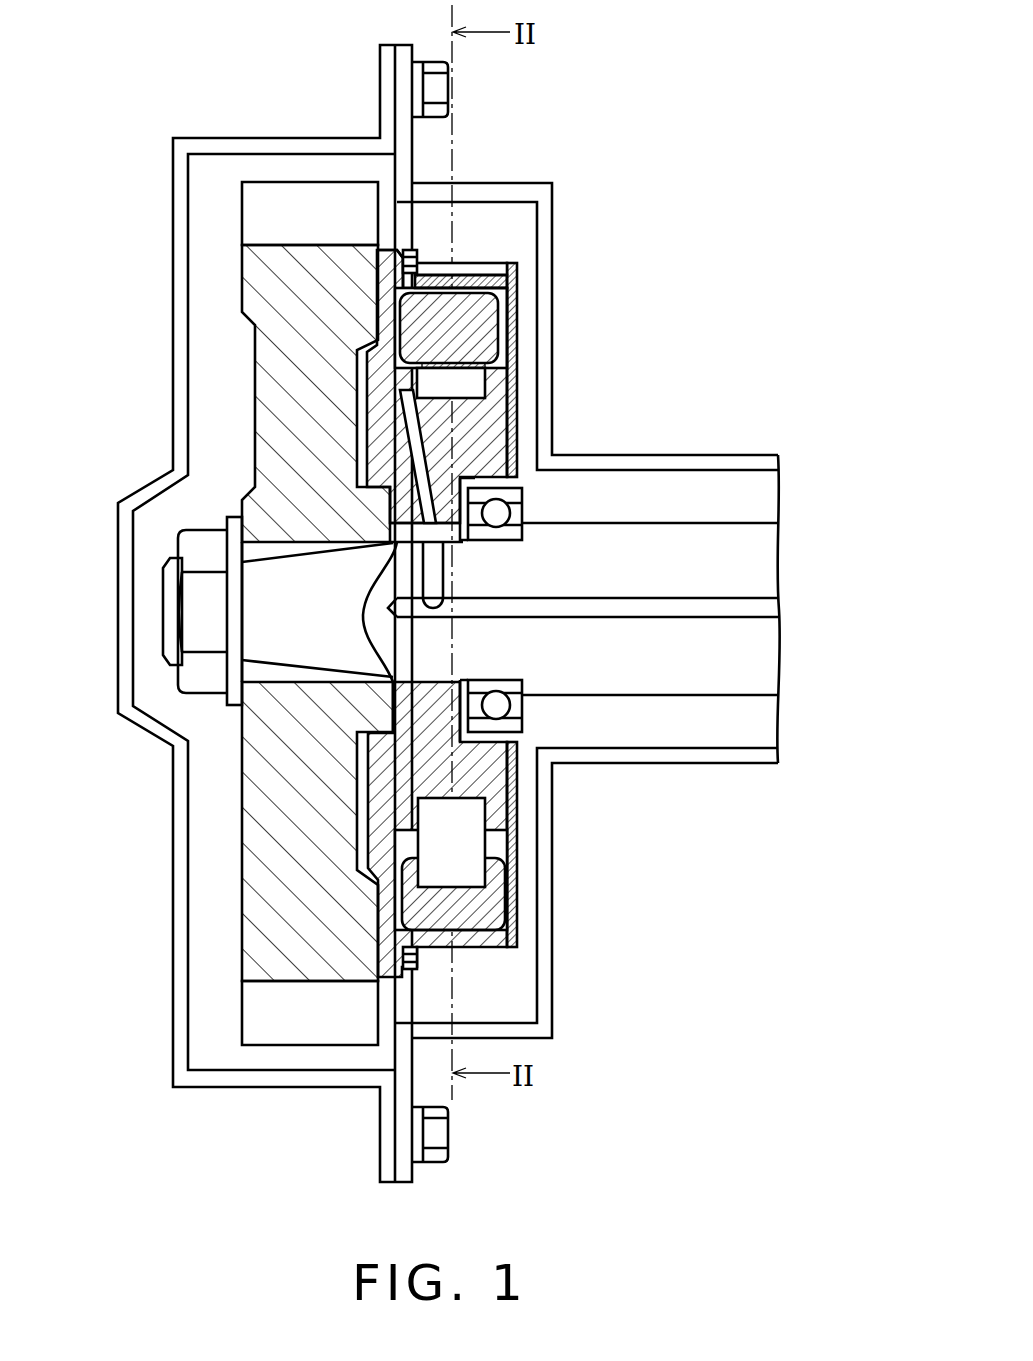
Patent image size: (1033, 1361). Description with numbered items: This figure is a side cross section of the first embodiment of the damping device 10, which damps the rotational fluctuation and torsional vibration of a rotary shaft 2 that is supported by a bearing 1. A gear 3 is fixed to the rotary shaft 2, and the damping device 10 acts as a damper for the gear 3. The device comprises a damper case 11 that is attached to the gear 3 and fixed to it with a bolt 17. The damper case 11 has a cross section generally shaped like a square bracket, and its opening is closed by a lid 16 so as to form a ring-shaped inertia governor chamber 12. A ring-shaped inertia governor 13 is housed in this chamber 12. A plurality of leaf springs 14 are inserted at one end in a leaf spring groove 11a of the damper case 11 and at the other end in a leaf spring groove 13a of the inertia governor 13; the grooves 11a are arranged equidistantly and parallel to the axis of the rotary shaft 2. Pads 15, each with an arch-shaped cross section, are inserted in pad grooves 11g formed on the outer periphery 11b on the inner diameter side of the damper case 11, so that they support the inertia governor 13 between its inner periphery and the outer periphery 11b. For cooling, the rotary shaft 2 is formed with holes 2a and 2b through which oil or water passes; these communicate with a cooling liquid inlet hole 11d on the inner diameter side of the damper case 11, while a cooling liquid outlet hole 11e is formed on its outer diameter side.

The bearing 1 is at (512, 497).
The rotary shaft 2 is at (708, 533).
The hole 2a is at (700, 605).
The hole 2b is at (440, 580).
The gear 3 is at (250, 296).
The damping device 10 is at (497, 242).
The damper case 11 is at (490, 418).
The leaf spring groove 11a is at (478, 806).
The outer periphery 11b is at (395, 372).
The cooling liquid inlet hole 11d is at (397, 543).
The cooling liquid outlet hole 11e is at (385, 303).
The pad groove 11g is at (370, 423).
The inertia governor chamber 12 is at (403, 842).
The inertia governor 13 is at (500, 308).
The leaf spring groove 13a is at (477, 878).
The leaf spring 14 is at (468, 843).
The pad 15 is at (468, 383).
The lid 16 is at (518, 277).
The bolt 17 is at (413, 250).